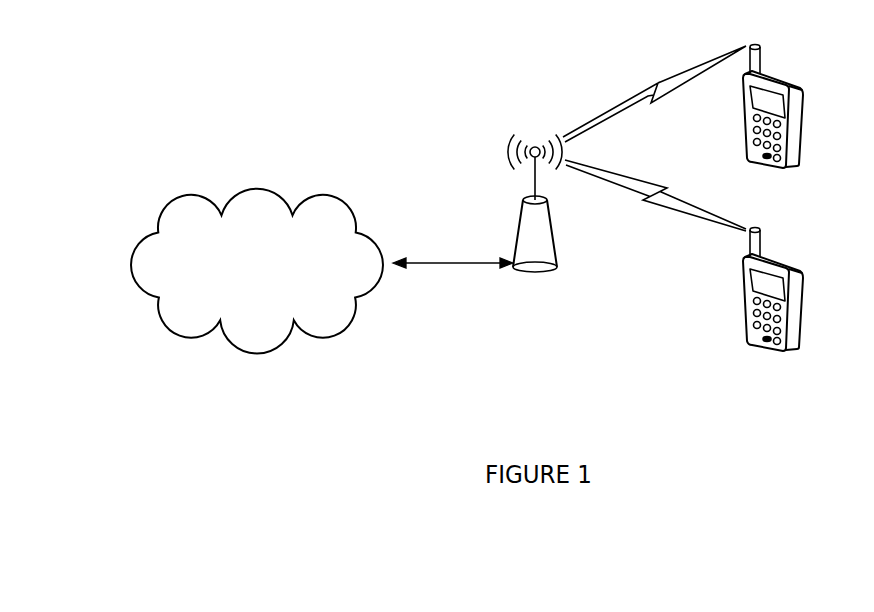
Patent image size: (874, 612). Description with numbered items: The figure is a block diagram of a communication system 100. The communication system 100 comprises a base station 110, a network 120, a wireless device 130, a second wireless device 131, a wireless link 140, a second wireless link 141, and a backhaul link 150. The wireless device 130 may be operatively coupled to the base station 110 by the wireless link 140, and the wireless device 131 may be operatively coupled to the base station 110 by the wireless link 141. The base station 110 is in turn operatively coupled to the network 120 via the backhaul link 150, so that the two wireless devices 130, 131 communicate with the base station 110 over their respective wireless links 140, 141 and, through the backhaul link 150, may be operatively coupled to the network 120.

The communication system 100 is at (178, 54).
The base station 110 is at (548, 272).
The network 120 is at (238, 283).
The wireless device 130 is at (793, 168).
The wireless device 131 is at (793, 351).
The wireless link 140 is at (651, 104).
The wireless link 141 is at (650, 185).
The backhaul link 150 is at (473, 262).